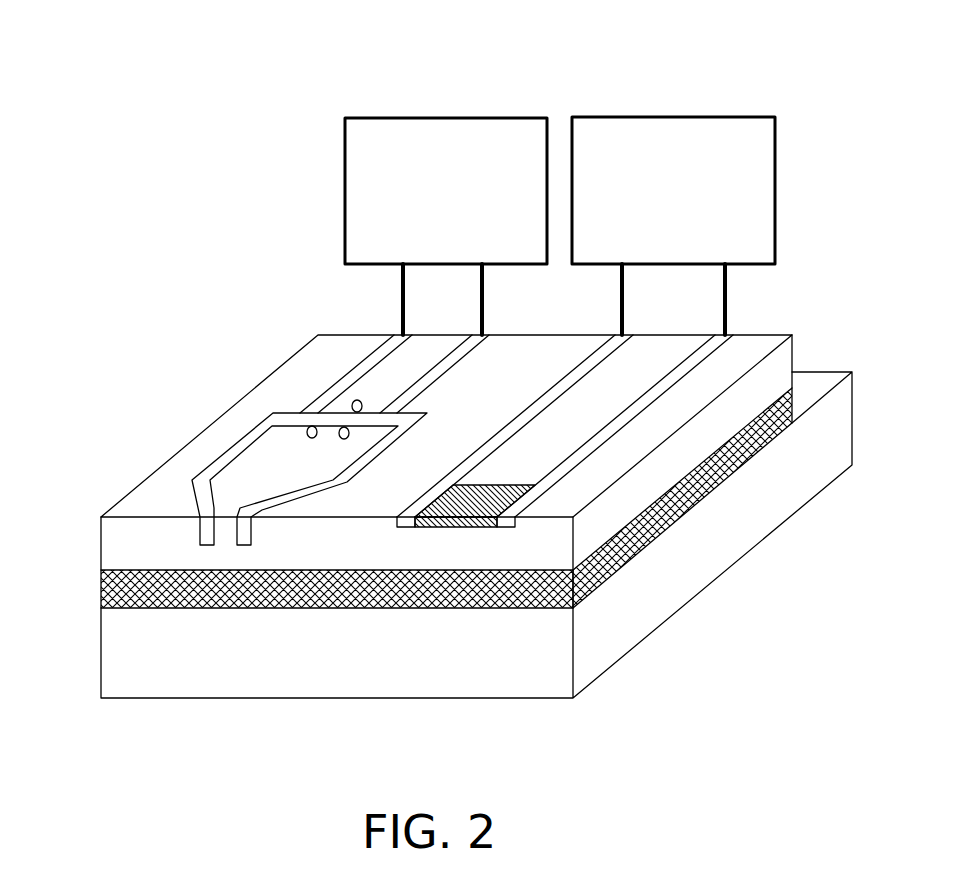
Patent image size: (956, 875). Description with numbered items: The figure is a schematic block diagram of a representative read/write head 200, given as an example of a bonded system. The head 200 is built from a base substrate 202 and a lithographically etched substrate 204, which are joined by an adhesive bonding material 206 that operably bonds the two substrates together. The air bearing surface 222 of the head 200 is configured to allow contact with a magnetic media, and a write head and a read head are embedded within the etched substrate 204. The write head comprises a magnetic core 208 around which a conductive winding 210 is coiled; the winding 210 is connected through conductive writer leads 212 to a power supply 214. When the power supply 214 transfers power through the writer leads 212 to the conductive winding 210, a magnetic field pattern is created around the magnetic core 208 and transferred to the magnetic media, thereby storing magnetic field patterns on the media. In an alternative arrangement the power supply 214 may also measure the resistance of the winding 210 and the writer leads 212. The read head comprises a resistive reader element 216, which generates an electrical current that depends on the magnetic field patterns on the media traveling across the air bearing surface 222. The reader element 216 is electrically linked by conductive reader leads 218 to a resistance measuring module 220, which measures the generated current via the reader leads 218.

The read/write head 200 is at (162, 82).
The base substrate 202 is at (100, 652).
The lithographically etched substrate 204 is at (100, 541).
The adhesive bonding material 206 is at (100, 588).
The magnetic core 208 is at (252, 437).
The conductive winding 210 is at (312, 437).
The conductive writer leads 212 is at (382, 353).
The power supply 214 is at (426, 233).
The resistive reader element 216 is at (502, 485).
The conductive reader leads 218 is at (602, 352).
The resistance measuring module 220 is at (694, 246).
The air bearing surface 222 is at (347, 559).